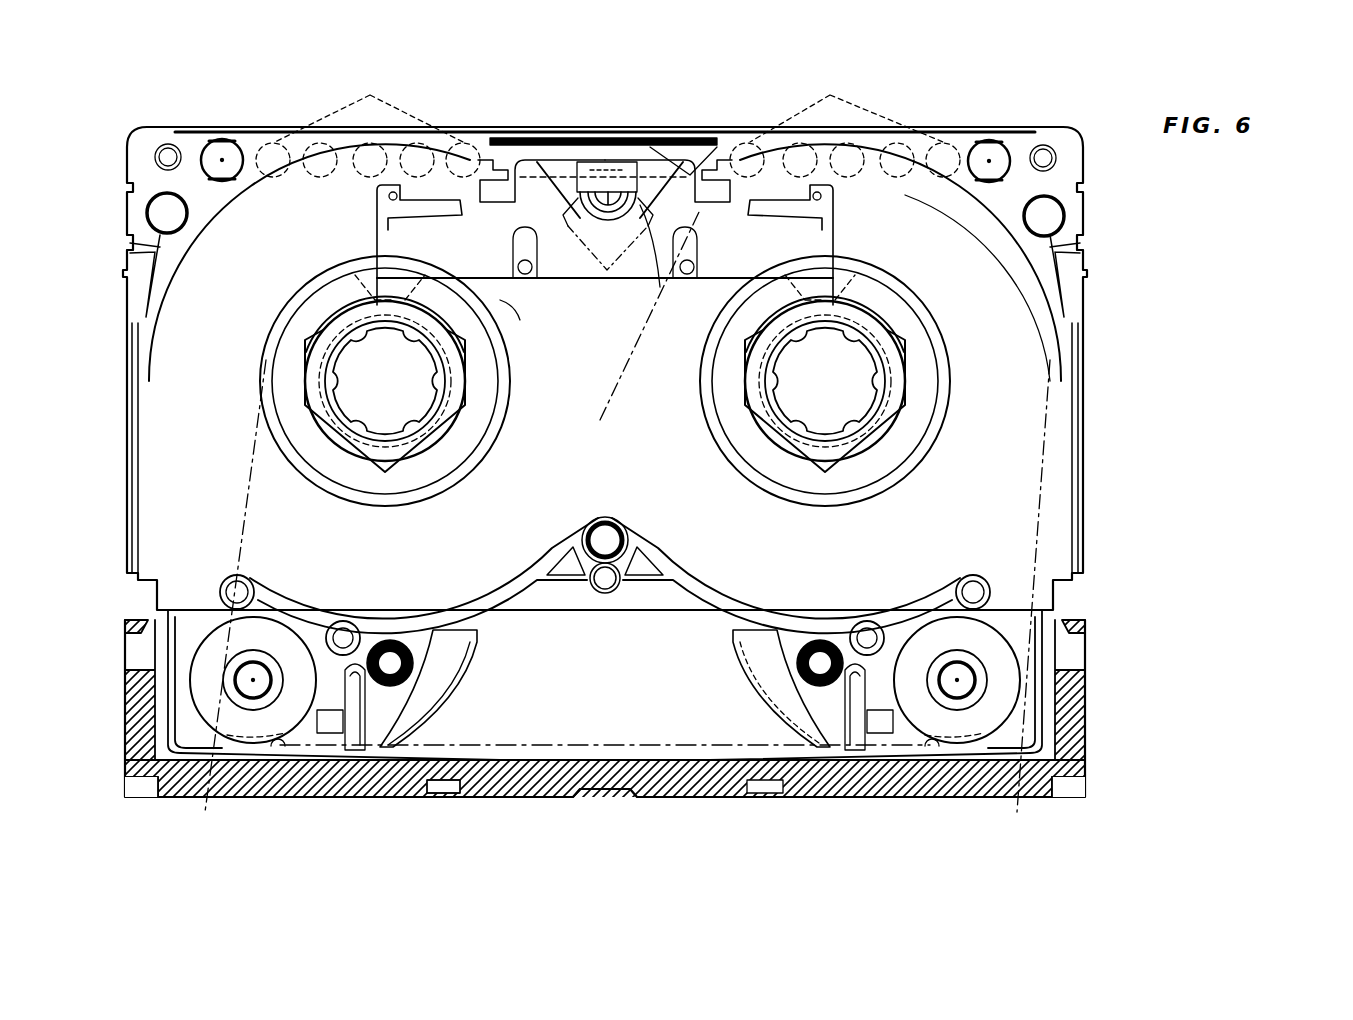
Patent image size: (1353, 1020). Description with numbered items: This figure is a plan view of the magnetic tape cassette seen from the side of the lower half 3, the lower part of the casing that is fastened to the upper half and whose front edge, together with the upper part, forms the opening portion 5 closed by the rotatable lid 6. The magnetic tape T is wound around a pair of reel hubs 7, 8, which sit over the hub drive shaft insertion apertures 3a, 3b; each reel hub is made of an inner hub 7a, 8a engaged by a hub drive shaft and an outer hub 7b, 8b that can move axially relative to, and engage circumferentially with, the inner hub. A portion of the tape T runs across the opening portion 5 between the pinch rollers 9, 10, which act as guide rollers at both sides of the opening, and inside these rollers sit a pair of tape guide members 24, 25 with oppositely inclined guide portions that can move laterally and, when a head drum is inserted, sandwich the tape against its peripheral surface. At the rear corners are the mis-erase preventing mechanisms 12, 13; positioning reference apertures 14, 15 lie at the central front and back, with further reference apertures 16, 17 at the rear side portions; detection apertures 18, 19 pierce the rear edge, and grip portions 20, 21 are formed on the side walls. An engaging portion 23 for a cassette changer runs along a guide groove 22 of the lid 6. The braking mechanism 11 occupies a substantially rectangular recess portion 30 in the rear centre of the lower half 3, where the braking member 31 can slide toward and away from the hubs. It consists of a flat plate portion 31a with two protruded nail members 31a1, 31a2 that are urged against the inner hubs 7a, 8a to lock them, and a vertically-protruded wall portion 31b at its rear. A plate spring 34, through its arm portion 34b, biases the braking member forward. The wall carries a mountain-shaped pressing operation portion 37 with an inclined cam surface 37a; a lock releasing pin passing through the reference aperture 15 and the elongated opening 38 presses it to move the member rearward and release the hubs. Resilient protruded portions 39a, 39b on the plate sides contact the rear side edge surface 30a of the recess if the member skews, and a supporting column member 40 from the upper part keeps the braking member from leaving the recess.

The lower half 3 is at (1085, 446).
The hub drive shaft insertion aperture 3a is at (345, 442).
The hub drive shaft insertion aperture 3b is at (868, 458).
The opening portion 5 is at (648, 735).
The lid 6 is at (527, 798).
The reel hub 7 is at (424, 492).
The inner hub 7a is at (455, 422).
The outer hub 7b is at (355, 485).
The reel hub 8 is at (925, 440).
The inner hub 8a is at (900, 400).
The outer hub 8b is at (826, 488).
The pinch roller 9 is at (222, 715).
The pinch roller 10 is at (980, 717).
The braking mechanism 11 is at (870, 212).
The mis-erase preventing mechanism 12 is at (220, 150).
The mis-erase preventing mechanism 13 is at (990, 152).
The positioning reference aperture 14 is at (610, 530).
The positioning reference aperture 15 is at (615, 170).
The positioning reference aperture 16 is at (145, 194).
The positioning reference aperture 17 is at (1085, 200).
The detection apertures 18 is at (368, 123).
The detection apertures 19 is at (845, 123).
The grip portion 20 is at (132, 257).
The grip portion 21 is at (1085, 262).
The guide groove 22 is at (692, 770).
The engaging portion 23 is at (440, 798).
The tape guide member 24 is at (440, 682).
The tape guide member 25 is at (790, 692).
The recess portion 30 is at (527, 310).
The rear side edge surface 30a is at (735, 200).
The braking member 31 is at (660, 290).
The flat plate portion 31a is at (558, 257).
The protruded nail member 31a1 is at (358, 275).
The protruded nail member 31a2 is at (865, 275).
The vertically-protruded wall portion 31b is at (600, 190).
The plate spring 34 is at (626, 138).
The arm portion 34b is at (648, 190).
The pressing operation portion 37 is at (607, 205).
The inclined cam surface 37a is at (607, 200).
The opening 38 is at (572, 222).
The protruded portion 39a is at (378, 190).
The protruded portion 39b is at (833, 190).
The supporting column member 40 is at (693, 207).
The magnetic tape T is at (600, 752).